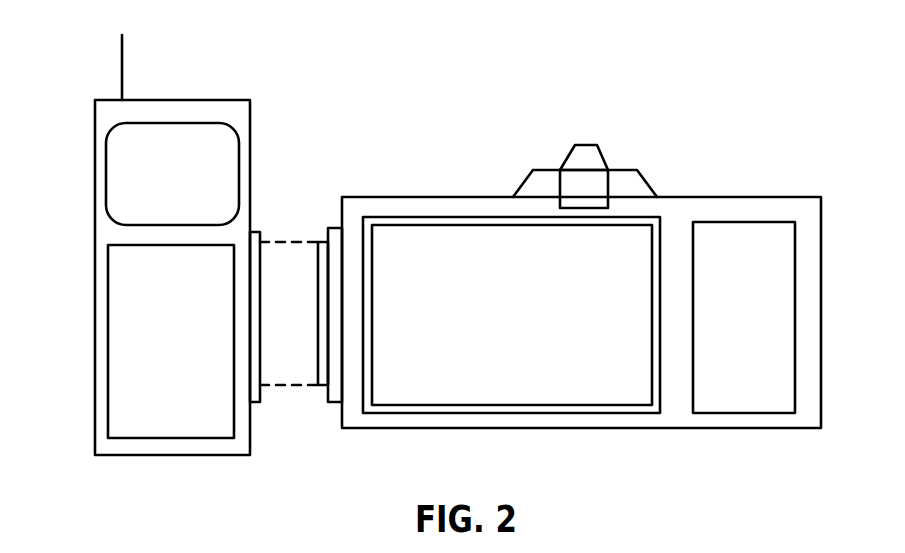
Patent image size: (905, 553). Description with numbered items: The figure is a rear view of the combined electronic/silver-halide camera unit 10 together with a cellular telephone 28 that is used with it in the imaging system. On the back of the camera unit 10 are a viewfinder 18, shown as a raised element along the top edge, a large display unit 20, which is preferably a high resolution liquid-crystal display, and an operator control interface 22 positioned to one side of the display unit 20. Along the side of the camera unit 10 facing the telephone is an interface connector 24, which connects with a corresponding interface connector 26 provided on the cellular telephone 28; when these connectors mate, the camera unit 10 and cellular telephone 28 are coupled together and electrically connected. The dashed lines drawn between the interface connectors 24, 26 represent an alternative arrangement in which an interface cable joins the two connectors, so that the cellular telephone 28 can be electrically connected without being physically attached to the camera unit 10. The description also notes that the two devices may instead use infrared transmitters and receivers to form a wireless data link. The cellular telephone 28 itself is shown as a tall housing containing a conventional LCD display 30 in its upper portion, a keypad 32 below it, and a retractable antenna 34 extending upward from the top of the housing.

The camera unit 10 is at (675, 170).
The viewfinder 18 is at (583, 153).
The display unit 20 is at (528, 329).
The operator control interface 22 is at (795, 263).
The interface connector 24 is at (325, 242).
The interface connector 26 is at (262, 403).
The cellular telephone 28 is at (95, 152).
The LCD display 30 is at (188, 186).
The keypad 32 is at (187, 363).
The retractable antenna 34 is at (122, 82).